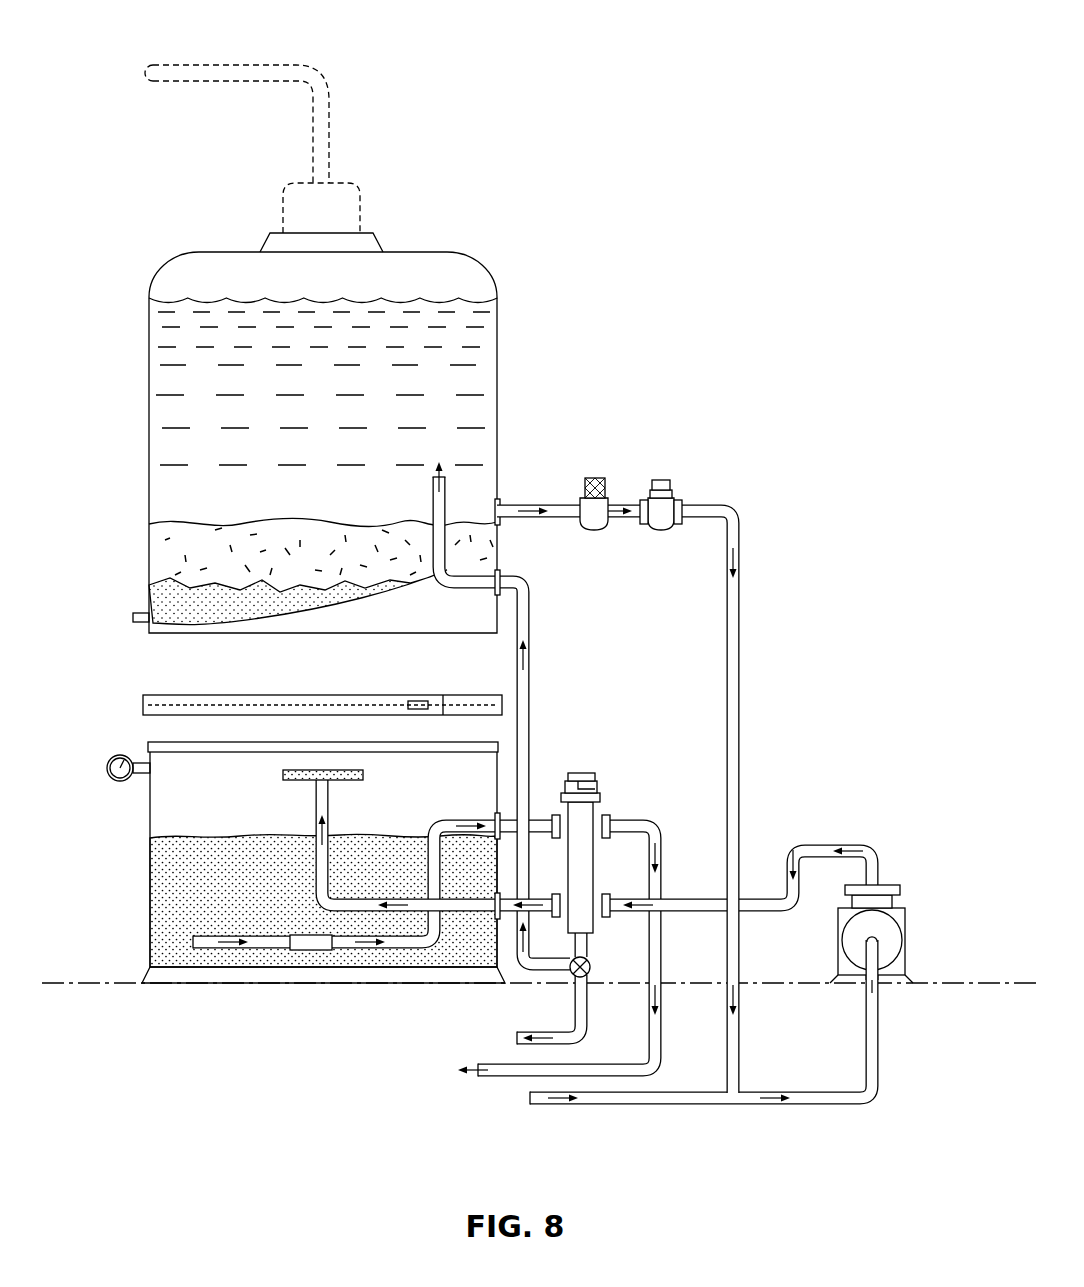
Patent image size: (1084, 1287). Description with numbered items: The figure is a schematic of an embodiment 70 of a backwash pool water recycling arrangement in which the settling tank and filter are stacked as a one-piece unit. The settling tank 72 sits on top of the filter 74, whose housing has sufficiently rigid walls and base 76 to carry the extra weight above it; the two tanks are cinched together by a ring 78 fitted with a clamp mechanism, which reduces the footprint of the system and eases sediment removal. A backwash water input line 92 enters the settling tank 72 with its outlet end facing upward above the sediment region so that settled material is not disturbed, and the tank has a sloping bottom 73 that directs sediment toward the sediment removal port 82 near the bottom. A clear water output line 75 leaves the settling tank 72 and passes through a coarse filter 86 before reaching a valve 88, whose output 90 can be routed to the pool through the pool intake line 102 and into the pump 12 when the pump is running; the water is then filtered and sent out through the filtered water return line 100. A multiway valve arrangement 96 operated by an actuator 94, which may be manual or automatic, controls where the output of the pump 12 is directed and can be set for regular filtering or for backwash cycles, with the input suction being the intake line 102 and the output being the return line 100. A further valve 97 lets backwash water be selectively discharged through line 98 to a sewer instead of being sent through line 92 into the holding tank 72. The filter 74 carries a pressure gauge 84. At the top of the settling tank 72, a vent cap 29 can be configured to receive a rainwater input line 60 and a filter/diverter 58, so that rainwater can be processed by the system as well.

The embodiment 70 is at (768, 47).
The rainwater input line 60 is at (180, 95).
The filter/diverter 58 is at (292, 187).
The vent cap 29 is at (375, 243).
The settling tank 72 is at (494, 251).
The clear water output line 75 is at (515, 503).
The coarse filter 86 is at (600, 478).
The valve 88 is at (662, 482).
The sloping bottom 73 is at (455, 572).
The valve output 90 is at (740, 592).
The backwash water input line 92 is at (530, 600).
The sediment removal port 82 is at (140, 612).
The ring 78 is at (143, 710).
The pressure gauge 84 is at (115, 783).
The filter 74 is at (124, 918).
The base 76 is at (185, 985).
The actuator 94 is at (577, 773).
The multiway valve arrangement 96 is at (583, 822).
The valve 97 is at (592, 967).
The line 98 is at (530, 1032).
The filtered water return line 100 is at (492, 1078).
The pool intake line 102 is at (548, 1106).
The pump 12 is at (890, 968).